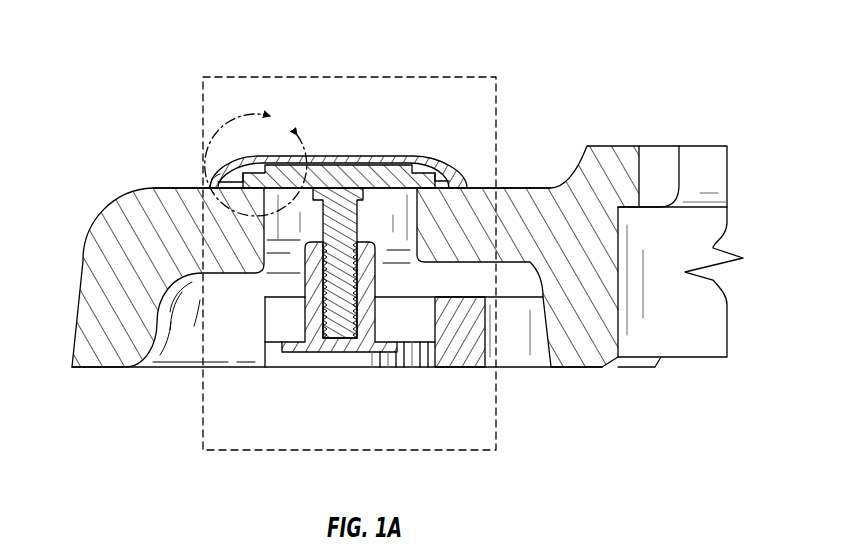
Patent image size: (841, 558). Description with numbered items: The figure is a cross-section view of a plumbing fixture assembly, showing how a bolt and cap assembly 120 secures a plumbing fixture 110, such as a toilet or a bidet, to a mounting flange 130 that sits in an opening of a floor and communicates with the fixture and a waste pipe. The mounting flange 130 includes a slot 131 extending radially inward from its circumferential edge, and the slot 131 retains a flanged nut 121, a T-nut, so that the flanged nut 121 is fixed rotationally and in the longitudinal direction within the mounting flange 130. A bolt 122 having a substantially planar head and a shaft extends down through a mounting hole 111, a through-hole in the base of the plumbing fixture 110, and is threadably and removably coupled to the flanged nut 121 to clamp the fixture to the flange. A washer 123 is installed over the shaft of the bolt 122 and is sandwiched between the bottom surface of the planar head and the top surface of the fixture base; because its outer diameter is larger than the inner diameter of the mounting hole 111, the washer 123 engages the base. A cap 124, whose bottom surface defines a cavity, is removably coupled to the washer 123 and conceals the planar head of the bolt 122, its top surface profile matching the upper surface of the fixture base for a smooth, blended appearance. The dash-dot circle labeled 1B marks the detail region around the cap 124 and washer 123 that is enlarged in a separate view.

The plumbing fixture 110 is at (597, 172).
The mounting hole 111 is at (287, 240).
The bolt and cap assembly 120 is at (341, 77).
The flanged nut 121 is at (367, 330).
The bolt 122 is at (357, 226).
The washer 123 is at (225, 212).
The cap 124 is at (423, 157).
The mounting flange 130 is at (457, 357).
The slot 131 is at (405, 360).
The detail view 1B is at (256, 161).